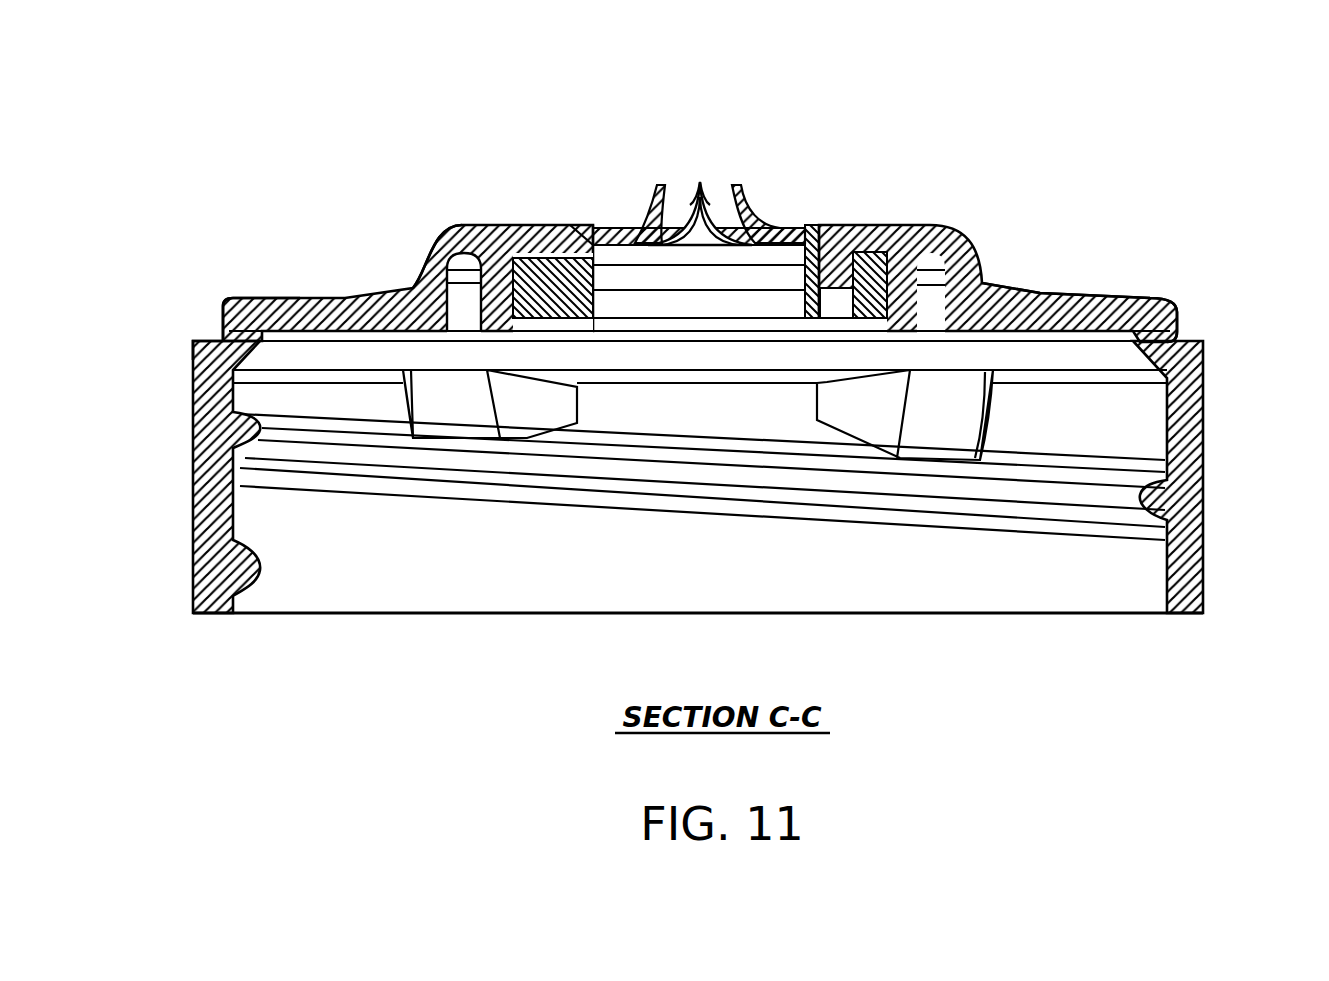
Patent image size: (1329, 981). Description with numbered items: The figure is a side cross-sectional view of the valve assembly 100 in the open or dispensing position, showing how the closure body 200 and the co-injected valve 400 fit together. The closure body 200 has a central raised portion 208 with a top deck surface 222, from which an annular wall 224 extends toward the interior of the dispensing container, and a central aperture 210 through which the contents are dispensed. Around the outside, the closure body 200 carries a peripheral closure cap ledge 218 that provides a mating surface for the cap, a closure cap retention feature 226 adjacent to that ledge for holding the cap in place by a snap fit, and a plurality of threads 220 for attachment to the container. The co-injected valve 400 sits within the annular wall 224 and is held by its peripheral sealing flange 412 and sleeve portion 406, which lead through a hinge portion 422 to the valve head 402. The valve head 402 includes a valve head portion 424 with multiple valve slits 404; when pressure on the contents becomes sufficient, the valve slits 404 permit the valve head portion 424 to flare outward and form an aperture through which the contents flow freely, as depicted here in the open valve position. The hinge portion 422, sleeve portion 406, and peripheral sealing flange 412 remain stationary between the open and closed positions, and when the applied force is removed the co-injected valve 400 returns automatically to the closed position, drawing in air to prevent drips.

The valve assembly 100 is at (166, 117).
The closure body 200 is at (1276, 435).
The central raised portion 208 is at (422, 265).
The central aperture 210 is at (818, 223).
The peripheral closure cap ledge 218 is at (205, 340).
The threads 220 is at (254, 455).
The top deck surface 222 is at (895, 223).
The annular wall 224 is at (445, 252).
The closure cap retention feature 226 is at (222, 305).
The co-injected valve 400 is at (712, 47).
The valve head 402 is at (699, 150).
The valve slits 404 is at (660, 182).
The sleeve portion 406 is at (578, 223).
The peripheral sealing flange 412 is at (847, 223).
The hinge portion 422 is at (590, 222).
The valve head portion 424 is at (637, 222).